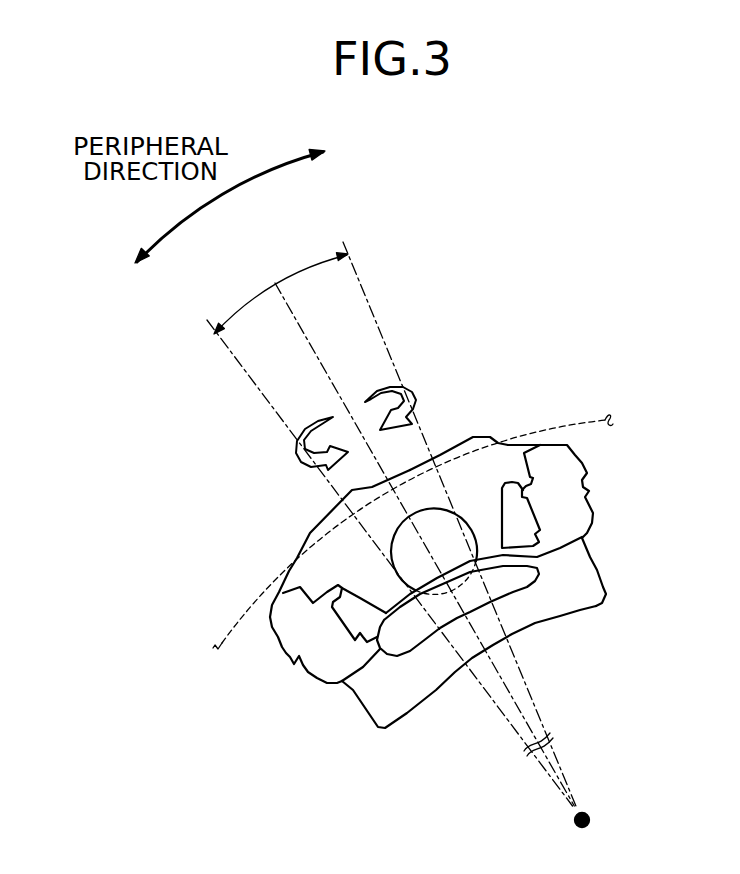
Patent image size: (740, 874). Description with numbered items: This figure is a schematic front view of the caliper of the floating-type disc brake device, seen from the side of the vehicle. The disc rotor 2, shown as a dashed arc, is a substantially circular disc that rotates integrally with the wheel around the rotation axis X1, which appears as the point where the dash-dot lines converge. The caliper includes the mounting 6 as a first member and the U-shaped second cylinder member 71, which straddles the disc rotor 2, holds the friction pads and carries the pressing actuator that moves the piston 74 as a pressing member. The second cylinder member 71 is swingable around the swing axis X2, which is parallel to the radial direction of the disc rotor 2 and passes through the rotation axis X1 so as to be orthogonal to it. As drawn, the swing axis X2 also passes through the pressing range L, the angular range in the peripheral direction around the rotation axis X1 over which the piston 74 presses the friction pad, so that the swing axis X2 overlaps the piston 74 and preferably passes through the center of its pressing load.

The disc rotor 2 is at (566, 420).
The mounting 6 is at (452, 546).
The second cylinder member 71 is at (455, 440).
The piston 74 is at (518, 622).
The rotation axis X1 is at (591, 814).
The swing axis X2 is at (294, 317).
The pressing range L is at (281, 292).